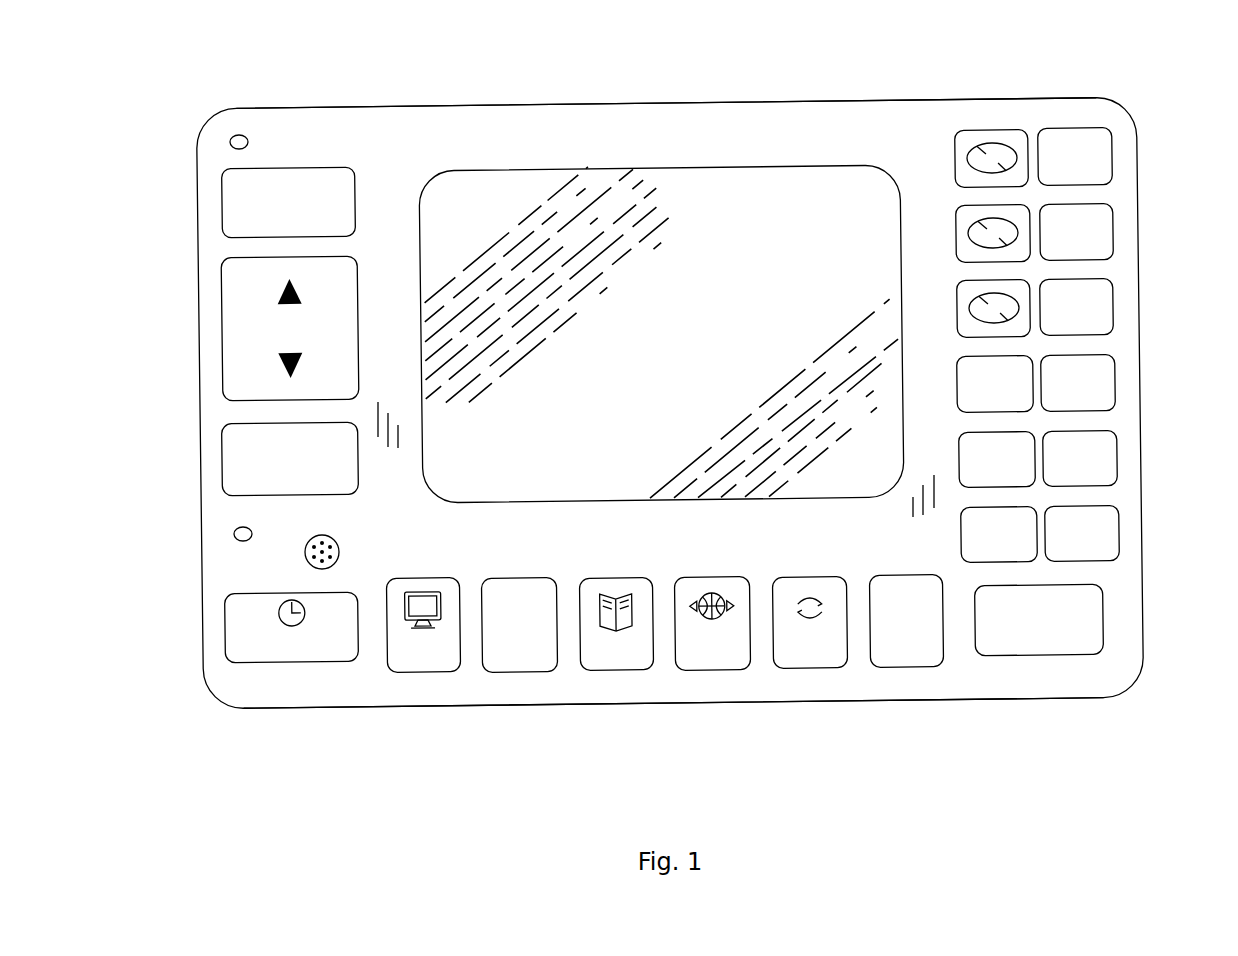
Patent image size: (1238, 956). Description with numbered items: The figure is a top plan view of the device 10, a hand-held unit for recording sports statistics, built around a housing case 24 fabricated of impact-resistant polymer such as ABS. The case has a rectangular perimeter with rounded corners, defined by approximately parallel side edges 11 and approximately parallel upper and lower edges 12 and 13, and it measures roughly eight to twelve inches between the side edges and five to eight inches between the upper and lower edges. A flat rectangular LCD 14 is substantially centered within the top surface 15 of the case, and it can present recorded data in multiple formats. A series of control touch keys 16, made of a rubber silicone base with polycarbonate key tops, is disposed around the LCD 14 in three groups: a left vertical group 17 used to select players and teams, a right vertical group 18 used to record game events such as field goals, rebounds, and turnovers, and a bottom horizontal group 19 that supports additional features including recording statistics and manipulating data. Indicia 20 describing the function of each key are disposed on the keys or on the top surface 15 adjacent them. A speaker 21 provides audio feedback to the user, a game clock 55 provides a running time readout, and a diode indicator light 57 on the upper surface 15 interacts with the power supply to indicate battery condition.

The device 10 is at (280, 712).
The side edges 11 is at (200, 645).
The upper edge 12 is at (802, 102).
The lower edge 13 is at (453, 710).
The LCD 14 is at (830, 287).
The top surface 15 is at (872, 549).
The control touch keys 16 is at (1085, 128).
The left vertical group 17 is at (240, 250).
The right vertical group 18 is at (1100, 198).
The bottom horizontal group 19 is at (857, 652).
The indicia 20 is at (255, 470).
The speaker 21 is at (345, 556).
The housing case 24 is at (1040, 685).
The game clock 55 is at (313, 667).
The diode indicator light 57 is at (230, 142).